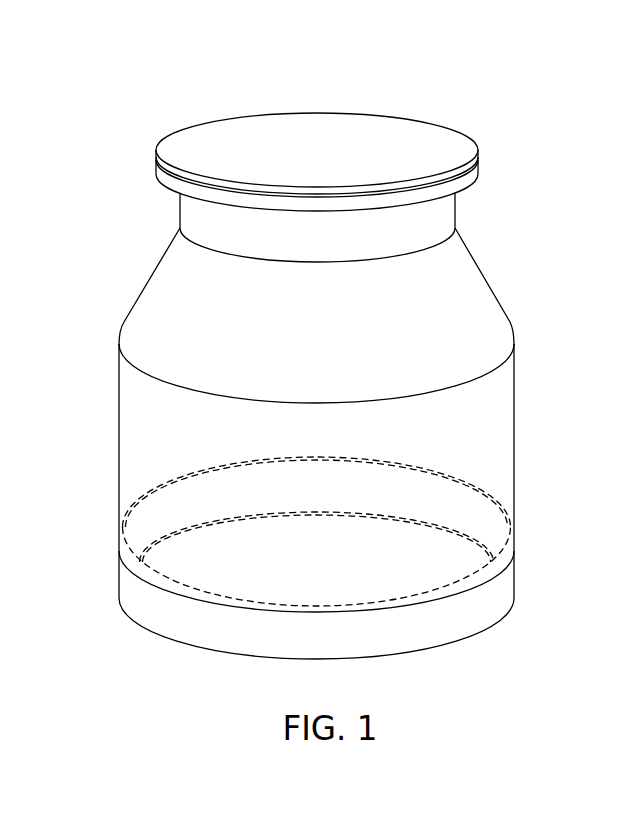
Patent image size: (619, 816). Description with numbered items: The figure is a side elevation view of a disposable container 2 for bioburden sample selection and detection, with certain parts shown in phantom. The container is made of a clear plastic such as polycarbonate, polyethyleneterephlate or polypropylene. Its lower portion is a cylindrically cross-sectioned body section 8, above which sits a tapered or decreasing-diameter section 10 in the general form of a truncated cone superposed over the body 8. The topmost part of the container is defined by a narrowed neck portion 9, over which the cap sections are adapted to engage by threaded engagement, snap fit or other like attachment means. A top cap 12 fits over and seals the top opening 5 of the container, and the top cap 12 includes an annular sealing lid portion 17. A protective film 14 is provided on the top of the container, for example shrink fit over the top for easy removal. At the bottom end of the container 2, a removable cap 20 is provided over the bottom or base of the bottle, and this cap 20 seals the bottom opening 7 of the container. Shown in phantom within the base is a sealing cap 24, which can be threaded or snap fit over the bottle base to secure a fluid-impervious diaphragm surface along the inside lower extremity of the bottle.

The top cap 12 is at (481, 95).
The disposable container 2 is at (570, 364).
The protective film 14 is at (260, 141).
The annular sealing lid portion 17 is at (492, 160).
The top opening 5 is at (210, 198).
The narrowed neck portion 9 is at (436, 211).
The tapered section 10 is at (460, 285).
The body section 8 is at (488, 420).
The sealing cap 24 is at (467, 525).
The removable cap 20 is at (488, 588).
The bottom opening 7 is at (265, 563).